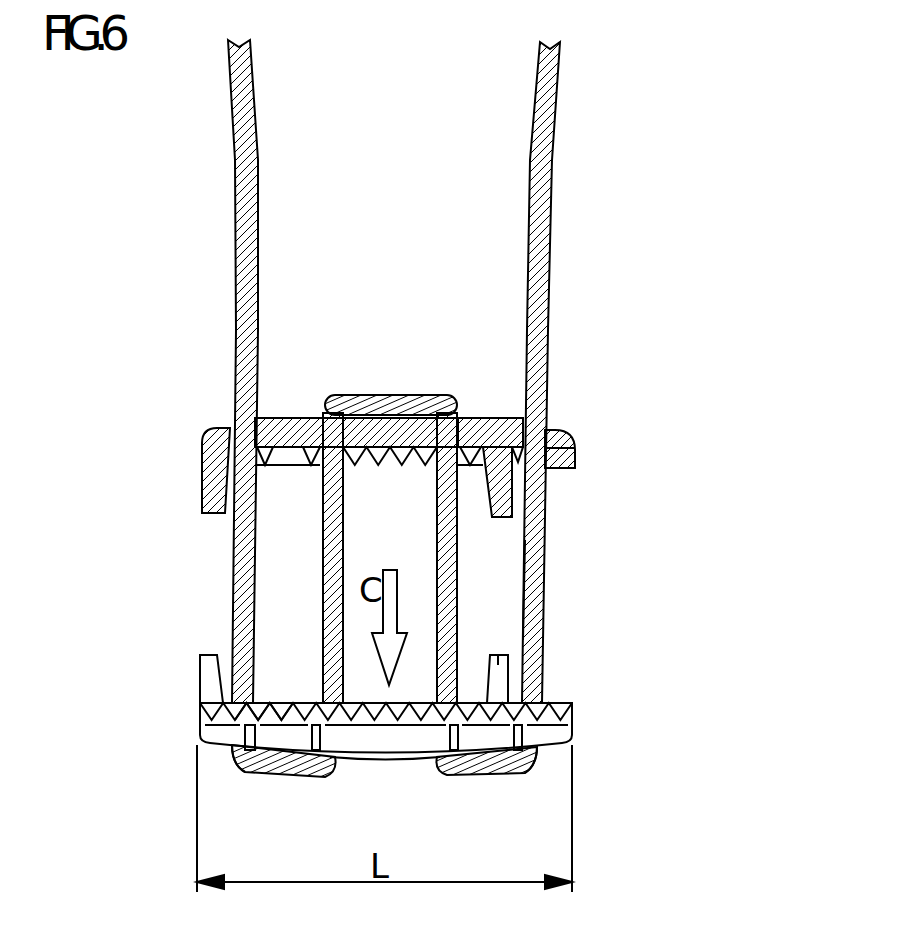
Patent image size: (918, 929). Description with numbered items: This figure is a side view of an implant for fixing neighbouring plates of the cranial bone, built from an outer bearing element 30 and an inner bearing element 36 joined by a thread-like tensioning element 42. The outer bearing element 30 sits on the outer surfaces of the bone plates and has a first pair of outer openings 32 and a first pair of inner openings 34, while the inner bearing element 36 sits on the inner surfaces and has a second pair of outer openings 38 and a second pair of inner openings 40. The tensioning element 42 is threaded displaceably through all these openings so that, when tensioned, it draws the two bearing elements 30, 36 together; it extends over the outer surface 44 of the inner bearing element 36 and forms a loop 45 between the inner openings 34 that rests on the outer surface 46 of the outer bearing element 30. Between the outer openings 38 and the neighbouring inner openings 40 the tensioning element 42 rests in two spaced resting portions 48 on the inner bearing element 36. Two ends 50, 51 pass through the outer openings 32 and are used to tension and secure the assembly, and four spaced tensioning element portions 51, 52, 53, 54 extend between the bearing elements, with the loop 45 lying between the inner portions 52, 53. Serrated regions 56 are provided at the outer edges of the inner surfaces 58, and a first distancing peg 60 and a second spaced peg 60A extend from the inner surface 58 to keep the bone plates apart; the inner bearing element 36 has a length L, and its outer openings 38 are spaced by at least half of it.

The outer bearing element 30 is at (620, 440).
The first pair of outer openings 32 is at (243, 405).
The first pair of inner openings 34 is at (332, 398).
The inner bearing element 36 is at (170, 707).
The second pair of outer openings 38 is at (229, 770).
The second pair of inner openings 40 is at (342, 765).
The thread-like tensioning element 42 is at (442, 371).
The outer surface of the inner bearing element 44 is at (385, 760).
The loop 45 is at (388, 395).
The outer surface of the outer bearing element 46 is at (505, 420).
The resting portions 48 is at (298, 740).
The end of the tensioning element 50 is at (549, 76).
The end of the tensioning element / tensioning element portion 51 is at (243, 87).
The inner tensioning element portion 52 is at (343, 530).
The inner tensioning element portion 53 is at (456, 575).
The tensioning element portion 54 is at (542, 598).
The serrated regions 56 is at (572, 705).
The inner surface of the bearing element 58 is at (563, 466).
The distancing peg 60 is at (210, 488).
The second spaced peg 60A is at (500, 512).